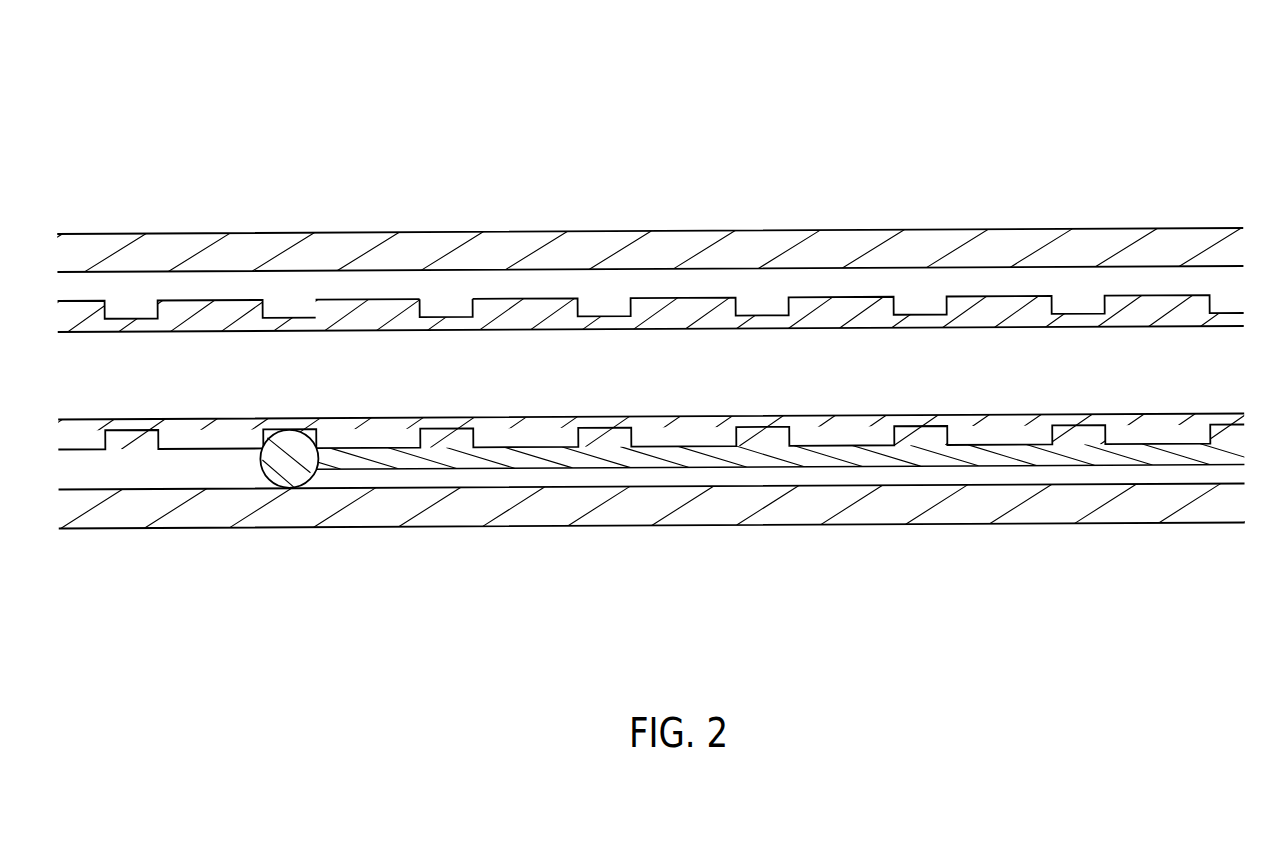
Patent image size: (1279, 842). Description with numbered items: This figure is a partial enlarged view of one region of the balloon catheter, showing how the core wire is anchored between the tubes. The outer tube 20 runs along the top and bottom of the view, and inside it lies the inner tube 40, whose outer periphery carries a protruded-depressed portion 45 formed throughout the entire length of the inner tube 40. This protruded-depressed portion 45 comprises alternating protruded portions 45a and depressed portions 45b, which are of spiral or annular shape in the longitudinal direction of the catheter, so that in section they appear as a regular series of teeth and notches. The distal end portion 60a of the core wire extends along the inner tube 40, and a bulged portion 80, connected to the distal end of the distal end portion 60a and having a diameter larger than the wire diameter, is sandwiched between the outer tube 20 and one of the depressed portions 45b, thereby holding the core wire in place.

The outer tube 20 is at (732, 212).
The inner tube 40 is at (843, 298).
The protruded-depressed portion 45 is at (577, 100).
The protruded portions 45a is at (367, 298).
The depressed portions 45b is at (447, 319).
The distal end portion 60a is at (487, 453).
The bulged portion 80 is at (310, 480).